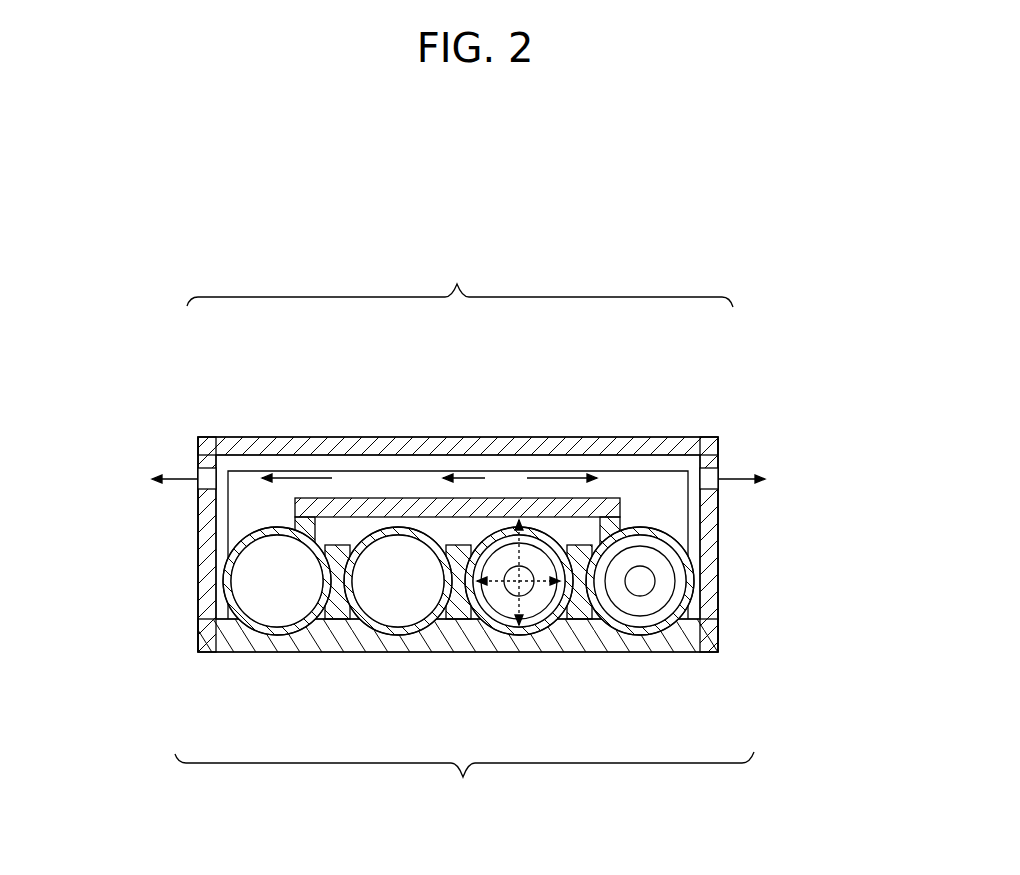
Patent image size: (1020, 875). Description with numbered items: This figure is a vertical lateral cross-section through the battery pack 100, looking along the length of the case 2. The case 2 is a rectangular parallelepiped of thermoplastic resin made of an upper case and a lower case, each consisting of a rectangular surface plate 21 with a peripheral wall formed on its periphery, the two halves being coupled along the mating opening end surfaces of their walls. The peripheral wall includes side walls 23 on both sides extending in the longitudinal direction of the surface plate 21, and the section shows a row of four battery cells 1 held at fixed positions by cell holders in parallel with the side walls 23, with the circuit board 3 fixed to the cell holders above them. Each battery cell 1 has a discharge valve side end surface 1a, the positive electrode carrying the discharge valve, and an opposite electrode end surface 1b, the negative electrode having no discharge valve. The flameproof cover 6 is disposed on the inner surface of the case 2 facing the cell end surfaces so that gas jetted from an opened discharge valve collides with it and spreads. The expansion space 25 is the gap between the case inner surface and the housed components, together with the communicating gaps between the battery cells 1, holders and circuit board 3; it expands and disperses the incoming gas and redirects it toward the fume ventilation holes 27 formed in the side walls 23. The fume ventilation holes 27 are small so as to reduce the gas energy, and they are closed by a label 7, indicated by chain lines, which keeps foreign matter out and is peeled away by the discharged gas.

The battery pack 100 is at (720, 244).
The case 2 is at (737, 366).
The surface plate 21 is at (443, 445).
The side walls 23 is at (202, 514).
The expansion space 25 is at (520, 464).
The fume ventilation holes 27 is at (184, 461).
The label 7 is at (196, 497).
The flameproof cover 6 is at (348, 487).
The circuit board 3 is at (390, 513).
The battery cell 1 is at (256, 608).
The discharge valve side end surface 1a is at (524, 588).
The electrode end surface 1b is at (282, 588).